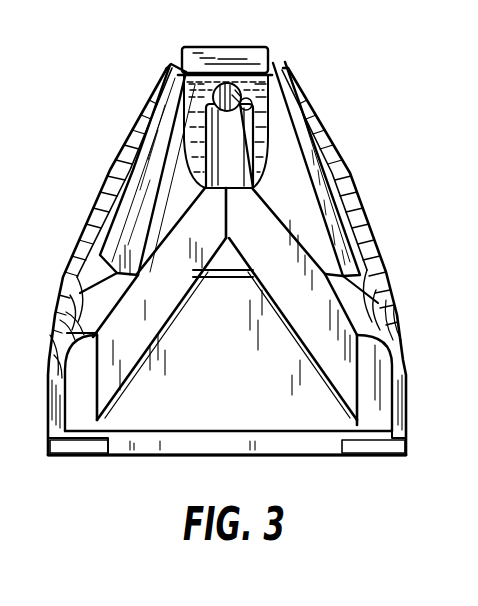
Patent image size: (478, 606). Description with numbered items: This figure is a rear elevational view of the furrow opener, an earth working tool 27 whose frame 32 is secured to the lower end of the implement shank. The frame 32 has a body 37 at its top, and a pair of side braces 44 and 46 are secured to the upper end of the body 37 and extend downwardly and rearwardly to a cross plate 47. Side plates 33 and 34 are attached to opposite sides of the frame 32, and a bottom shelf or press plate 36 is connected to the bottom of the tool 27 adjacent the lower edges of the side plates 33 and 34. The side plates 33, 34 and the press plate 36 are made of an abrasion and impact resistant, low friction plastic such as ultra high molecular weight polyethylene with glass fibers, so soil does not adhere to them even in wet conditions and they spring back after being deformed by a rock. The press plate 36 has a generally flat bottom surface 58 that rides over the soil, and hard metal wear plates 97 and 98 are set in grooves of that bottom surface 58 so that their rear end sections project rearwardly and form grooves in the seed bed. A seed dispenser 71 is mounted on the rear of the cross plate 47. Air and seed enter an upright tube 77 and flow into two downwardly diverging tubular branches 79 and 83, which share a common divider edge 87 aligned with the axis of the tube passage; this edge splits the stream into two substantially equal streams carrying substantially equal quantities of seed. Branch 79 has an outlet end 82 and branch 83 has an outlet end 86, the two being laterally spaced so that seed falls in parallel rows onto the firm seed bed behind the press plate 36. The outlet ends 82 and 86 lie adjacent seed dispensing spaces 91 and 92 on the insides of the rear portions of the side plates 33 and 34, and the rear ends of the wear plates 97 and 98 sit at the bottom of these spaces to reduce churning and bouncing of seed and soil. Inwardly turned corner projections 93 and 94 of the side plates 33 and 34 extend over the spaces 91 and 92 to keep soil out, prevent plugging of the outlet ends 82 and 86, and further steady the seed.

The earth working tool 27 is at (321, 72).
The frame 32 is at (168, 71).
The side plate 33 is at (340, 190).
The side plate 34 is at (102, 206).
The press plate 36 is at (140, 445).
The body 37 is at (228, 62).
The side brace 44 is at (133, 167).
The side brace 46 is at (314, 146).
The cross plate 47 is at (205, 420).
The bottom surface 58 is at (288, 456).
The seed dispenser 71 is at (257, 229).
The upright tube 77 is at (262, 160).
The tube branch 79 is at (143, 318).
The outlet end 82 is at (100, 373).
The tube branch 83 is at (297, 307).
The outlet end 86 is at (348, 382).
The divider edge 87 is at (220, 236).
The seed dispensing space 91 is at (80, 393).
The seed dispensing space 92 is at (380, 400).
The corner projection 93 is at (68, 352).
The corner projection 94 is at (413, 320).
The wear plate 97 is at (388, 458).
The wear plate 98 is at (48, 456).